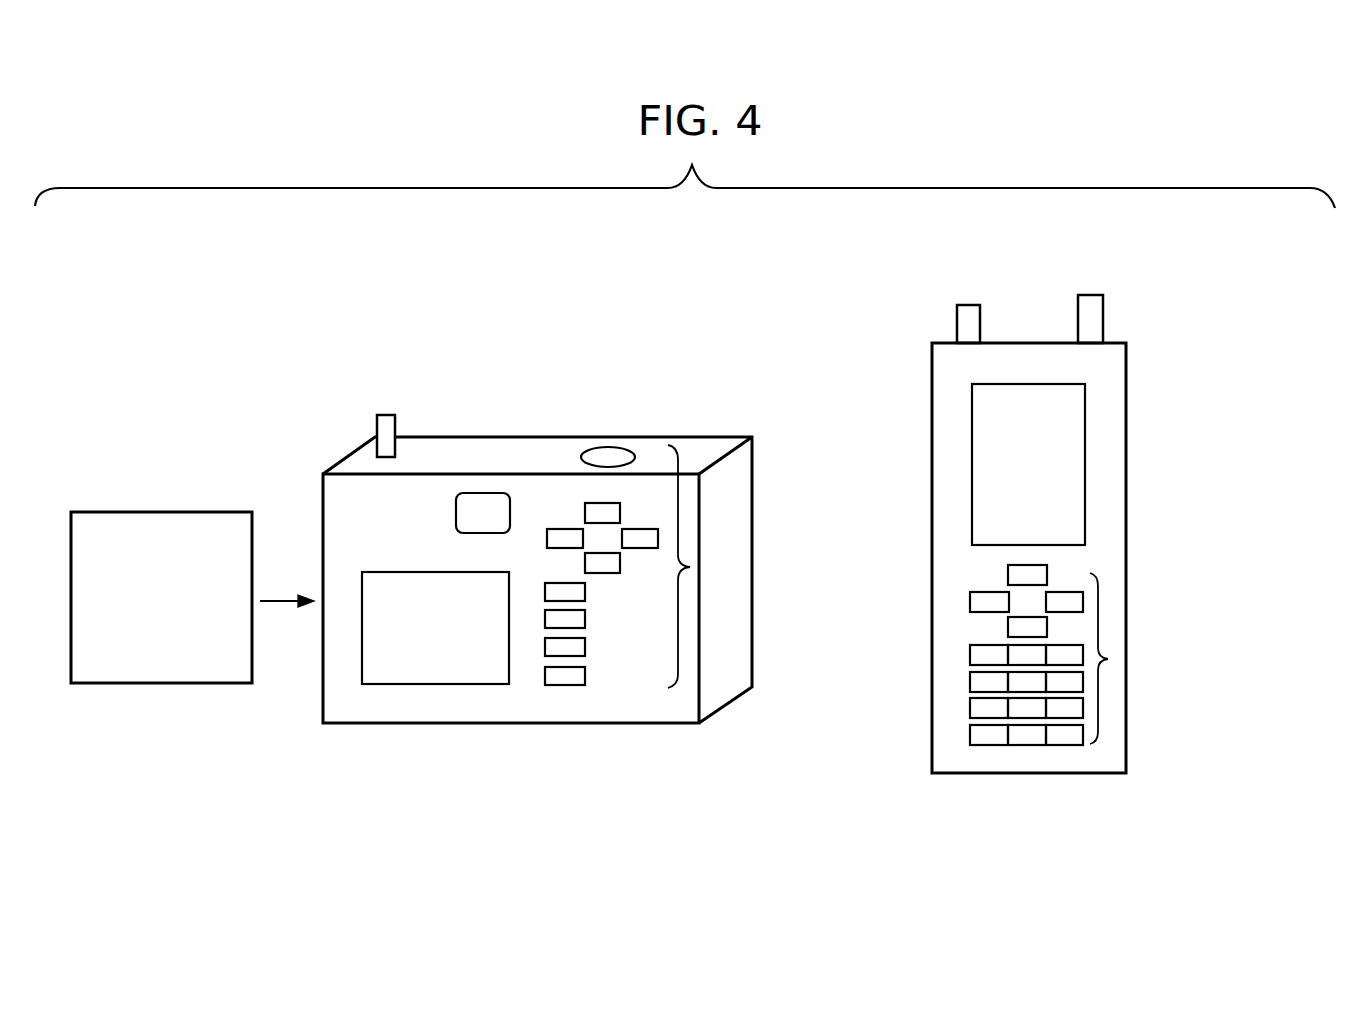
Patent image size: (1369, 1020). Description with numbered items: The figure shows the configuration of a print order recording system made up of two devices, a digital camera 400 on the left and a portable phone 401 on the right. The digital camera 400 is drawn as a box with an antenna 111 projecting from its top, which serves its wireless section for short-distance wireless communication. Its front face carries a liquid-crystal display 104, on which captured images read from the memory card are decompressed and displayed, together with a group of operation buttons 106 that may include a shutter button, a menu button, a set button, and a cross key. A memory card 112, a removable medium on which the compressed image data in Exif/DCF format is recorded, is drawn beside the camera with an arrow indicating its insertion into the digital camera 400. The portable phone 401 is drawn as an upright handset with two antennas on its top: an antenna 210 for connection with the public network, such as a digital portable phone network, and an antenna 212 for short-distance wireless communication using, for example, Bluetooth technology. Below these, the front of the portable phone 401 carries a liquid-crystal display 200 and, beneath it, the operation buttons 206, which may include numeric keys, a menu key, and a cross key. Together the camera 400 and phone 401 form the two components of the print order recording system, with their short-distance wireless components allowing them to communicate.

The memory card 112 is at (176, 512).
The digital camera 400 is at (693, 437).
The antenna 111 is at (386, 413).
The liquid-crystal display 104 is at (391, 572).
The operation buttons 106 is at (690, 567).
The portable phone 401 is at (1128, 343).
The antenna 212 is at (967, 304).
The antenna 210 is at (1090, 294).
The liquid-crystal display 200 is at (1085, 482).
The operation buttons 206 is at (1108, 659).